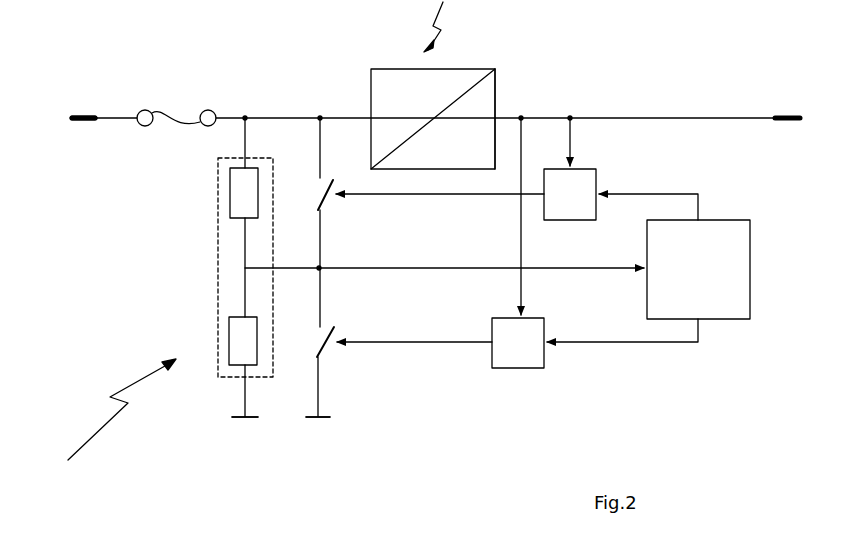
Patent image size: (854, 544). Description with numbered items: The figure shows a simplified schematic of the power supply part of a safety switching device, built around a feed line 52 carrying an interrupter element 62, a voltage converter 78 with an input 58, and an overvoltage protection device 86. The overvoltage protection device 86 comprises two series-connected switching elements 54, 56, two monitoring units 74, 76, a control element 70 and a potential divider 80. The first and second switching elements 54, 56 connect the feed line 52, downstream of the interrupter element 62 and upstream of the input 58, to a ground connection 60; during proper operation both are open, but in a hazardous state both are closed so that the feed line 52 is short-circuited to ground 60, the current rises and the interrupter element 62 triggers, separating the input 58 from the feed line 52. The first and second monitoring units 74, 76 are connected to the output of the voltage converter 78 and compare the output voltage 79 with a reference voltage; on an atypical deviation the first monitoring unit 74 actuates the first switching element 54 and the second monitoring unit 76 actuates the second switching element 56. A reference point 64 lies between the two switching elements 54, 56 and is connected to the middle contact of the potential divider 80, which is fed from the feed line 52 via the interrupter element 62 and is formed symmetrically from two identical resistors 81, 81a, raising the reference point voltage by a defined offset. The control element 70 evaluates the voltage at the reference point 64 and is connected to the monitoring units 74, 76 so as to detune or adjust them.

The feed line 52 is at (86, 118).
The interrupter element 62 is at (184, 110).
The first switching element 54 is at (318, 192).
The input 58 is at (371, 118).
The voltage converter 78 is at (497, 97).
The output voltage 79 is at (680, 118).
The first monitoring unit 74 is at (597, 175).
The control element 70 is at (750, 272).
The resistor 81 is at (230, 198).
The potential divider 80 is at (175, 291).
The reference point 64 is at (321, 266).
The second switching element 56 is at (322, 345).
The second monitoring unit 76 is at (518, 368).
The resistor 81a is at (232, 355).
The ground connection 60 is at (246, 419).
The overvoltage protection device 86 is at (117, 421).